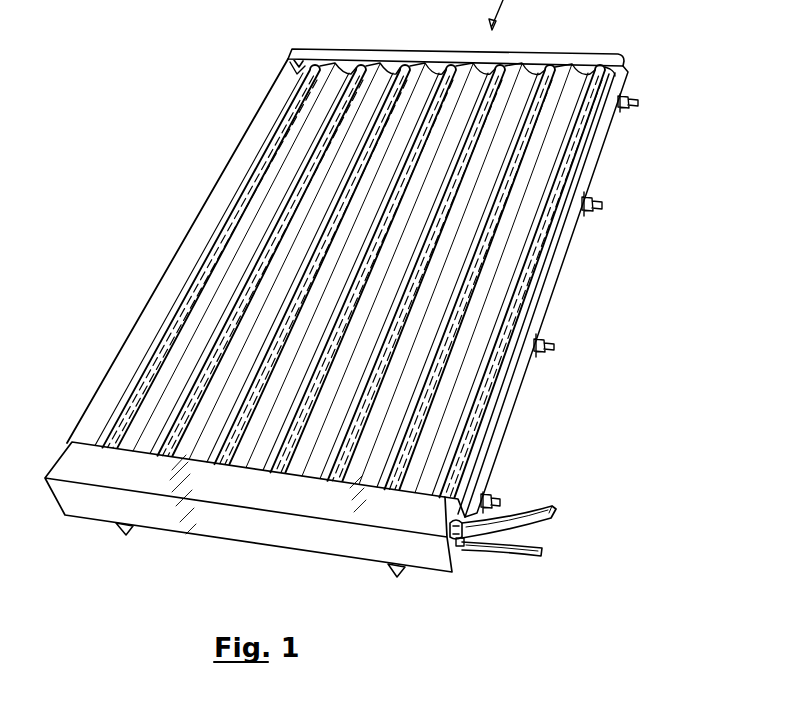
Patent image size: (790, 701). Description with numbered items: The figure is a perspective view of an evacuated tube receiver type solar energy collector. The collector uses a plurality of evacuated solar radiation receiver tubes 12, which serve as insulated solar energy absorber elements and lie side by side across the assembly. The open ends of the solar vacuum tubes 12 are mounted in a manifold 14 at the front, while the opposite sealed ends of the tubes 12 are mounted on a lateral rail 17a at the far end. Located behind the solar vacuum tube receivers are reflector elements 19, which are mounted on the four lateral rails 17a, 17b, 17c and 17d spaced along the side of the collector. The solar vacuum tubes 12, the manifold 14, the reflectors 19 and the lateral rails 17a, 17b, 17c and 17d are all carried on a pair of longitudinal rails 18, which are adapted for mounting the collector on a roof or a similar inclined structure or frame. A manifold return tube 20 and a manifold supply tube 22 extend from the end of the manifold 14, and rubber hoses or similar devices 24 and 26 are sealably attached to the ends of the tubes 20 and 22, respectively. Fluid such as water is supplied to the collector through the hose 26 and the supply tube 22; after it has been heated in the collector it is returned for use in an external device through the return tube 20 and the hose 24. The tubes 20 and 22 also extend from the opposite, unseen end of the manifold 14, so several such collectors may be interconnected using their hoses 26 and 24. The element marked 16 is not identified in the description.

The evacuated solar radiation receiver tube 12 is at (590, 100).
The manifold 14 is at (235, 520).
The header bar 16 is at (369, 50).
The lateral rail 17a is at (640, 112).
The lateral rail 17b is at (602, 213).
The lateral rail 17c is at (553, 356).
The lateral rail 17d is at (496, 500).
The longitudinal rail 18 is at (118, 528).
The reflector element 19 is at (427, 83).
The manifold return tube 20 is at (446, 525).
The manifold supply tube 22 is at (460, 550).
The rubber hose 24 is at (513, 520).
The rubber hose 26 is at (528, 558).